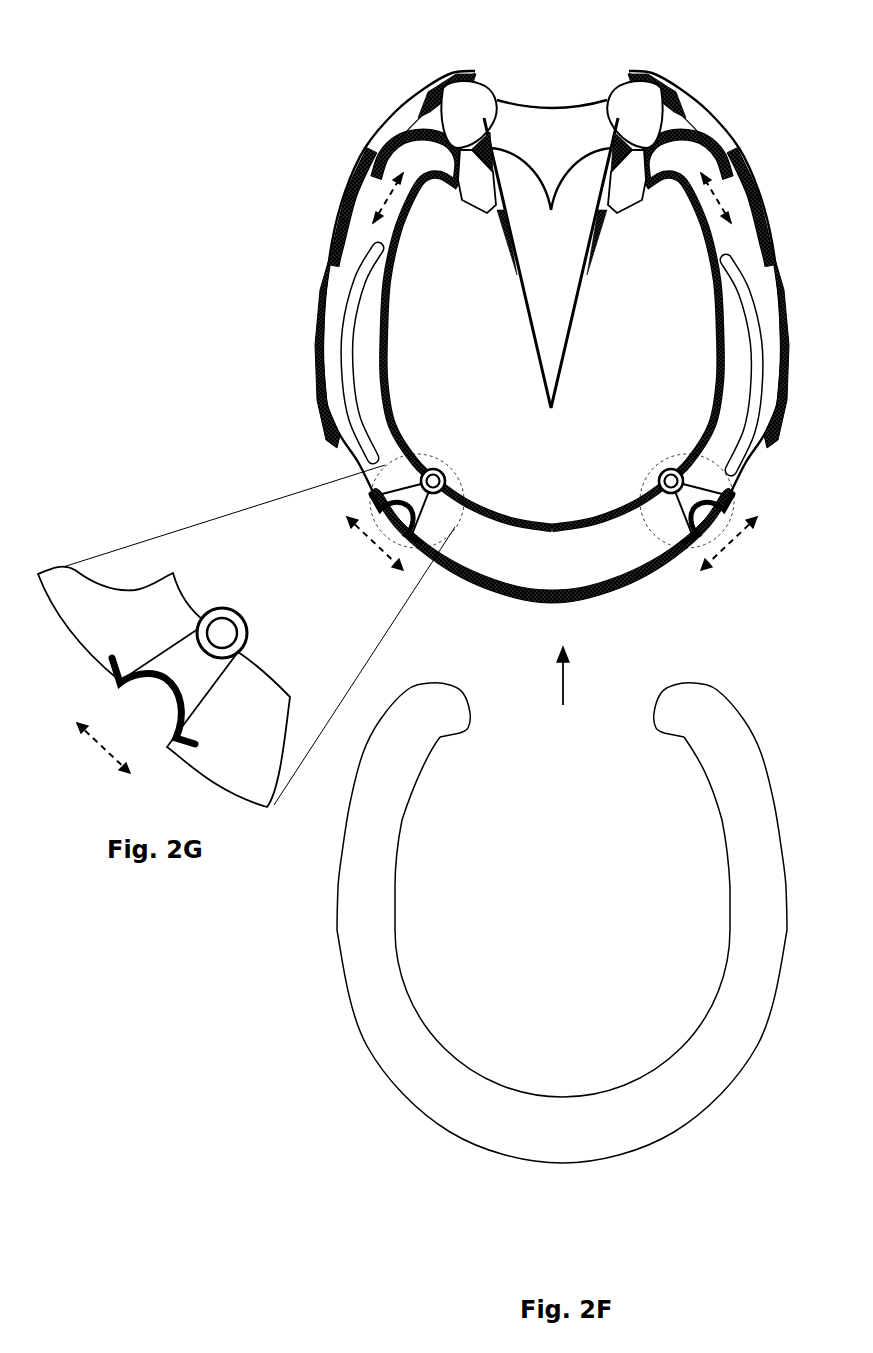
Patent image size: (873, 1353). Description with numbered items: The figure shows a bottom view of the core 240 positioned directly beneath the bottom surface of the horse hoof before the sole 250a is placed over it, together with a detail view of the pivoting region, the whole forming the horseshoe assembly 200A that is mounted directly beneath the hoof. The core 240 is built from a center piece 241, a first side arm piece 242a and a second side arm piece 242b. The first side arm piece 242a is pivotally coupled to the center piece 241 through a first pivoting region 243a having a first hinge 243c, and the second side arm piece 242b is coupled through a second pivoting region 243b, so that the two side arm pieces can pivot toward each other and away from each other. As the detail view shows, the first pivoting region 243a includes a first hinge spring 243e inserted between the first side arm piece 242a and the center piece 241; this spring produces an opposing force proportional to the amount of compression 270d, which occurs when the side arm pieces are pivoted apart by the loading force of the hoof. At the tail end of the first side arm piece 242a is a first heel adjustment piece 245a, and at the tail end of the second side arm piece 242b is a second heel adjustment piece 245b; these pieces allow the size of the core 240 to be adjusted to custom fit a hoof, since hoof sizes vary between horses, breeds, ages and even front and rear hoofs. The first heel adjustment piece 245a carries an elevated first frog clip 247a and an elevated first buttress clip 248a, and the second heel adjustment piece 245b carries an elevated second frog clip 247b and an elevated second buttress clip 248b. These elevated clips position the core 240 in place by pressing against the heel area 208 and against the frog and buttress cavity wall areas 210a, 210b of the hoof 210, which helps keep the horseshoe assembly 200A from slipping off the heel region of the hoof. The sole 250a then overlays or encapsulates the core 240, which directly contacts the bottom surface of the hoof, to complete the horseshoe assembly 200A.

In FIG. 2F, the horseshoe assembly 200A is at (188, 156).
In FIG. 2F, the heel area 208 is at (568, 100).
In FIG. 2F, the outer shell 210 is at (718, 128).
In FIG. 2F, the frog cavity wall area 210a is at (643, 85).
In FIG. 2F, the buttress cavity wall area 210b is at (575, 242).
In FIG. 2F, the first heel adjustment piece 245a is at (413, 156).
In FIG. 2F, the second heel adjustment piece 245b is at (697, 156).
In FIG. 2F, the elevated first frog clip 247a is at (472, 187).
In FIG. 2F, the elevated second frog clip 247b is at (633, 187).
In FIG. 2F, the elevated first buttress clip 248a is at (444, 106).
In FIG. 2F, the elevated second buttress clip 248b is at (617, 106).
In FIG. 2F, the first side arm piece 242a is at (390, 385).
In FIG. 2G, the first side arm piece 242a is at (132, 619).
In FIG. 2F, the second side arm piece 242b is at (703, 427).
In FIG. 2F, the first pivoting region 243a is at (457, 487).
In FIG. 2F, the second pivoting region 243b is at (672, 457).
In FIG. 2G, the first hinge 243c is at (295, 619).
In FIG. 2G, the first hinge spring 243e is at (150, 684).
In FIG. 2F, the center piece 241 is at (575, 567).
In FIG. 2G, the center piece 241 is at (272, 729).
In FIG. 2F, the core 240 is at (580, 744).
In FIG. 2F, the sole 250a is at (585, 1132).
In FIG. 2G, the amount of compression 270d is at (95, 754).